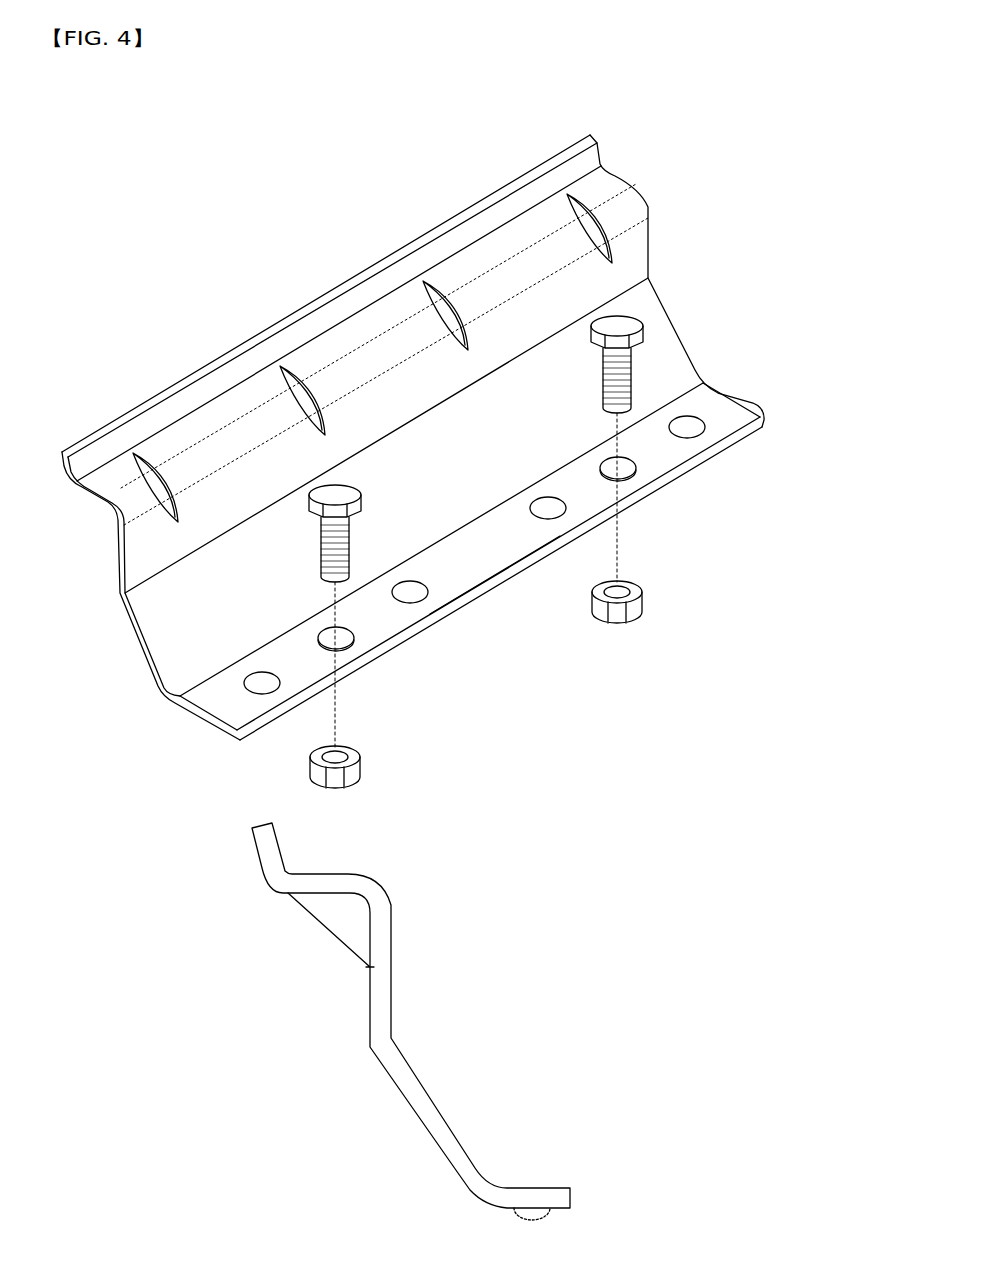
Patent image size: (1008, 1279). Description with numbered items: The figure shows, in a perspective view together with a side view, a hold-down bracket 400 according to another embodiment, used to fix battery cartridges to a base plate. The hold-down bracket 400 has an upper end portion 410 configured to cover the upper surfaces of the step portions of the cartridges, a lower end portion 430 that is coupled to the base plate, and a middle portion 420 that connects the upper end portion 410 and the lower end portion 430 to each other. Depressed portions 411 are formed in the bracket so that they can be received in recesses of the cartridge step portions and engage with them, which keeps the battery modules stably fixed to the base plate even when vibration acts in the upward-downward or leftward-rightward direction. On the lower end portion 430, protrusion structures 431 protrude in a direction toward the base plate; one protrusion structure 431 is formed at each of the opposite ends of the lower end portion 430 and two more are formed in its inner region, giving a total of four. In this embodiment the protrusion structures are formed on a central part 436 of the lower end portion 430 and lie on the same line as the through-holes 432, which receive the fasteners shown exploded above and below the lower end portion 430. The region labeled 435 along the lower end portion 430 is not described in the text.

The hold-down bracket 400 is at (110, 167).
The upper end portion 410 is at (602, 177).
The depressed portion 411 is at (317, 418).
The middle portion 420 is at (655, 318).
The lower end portion 430 is at (718, 408).
The protrusion structure 431 is at (690, 432).
The through-hole 432 is at (632, 452).
The front edge portion 435 is at (488, 588).
The central part 436 is at (397, 603).